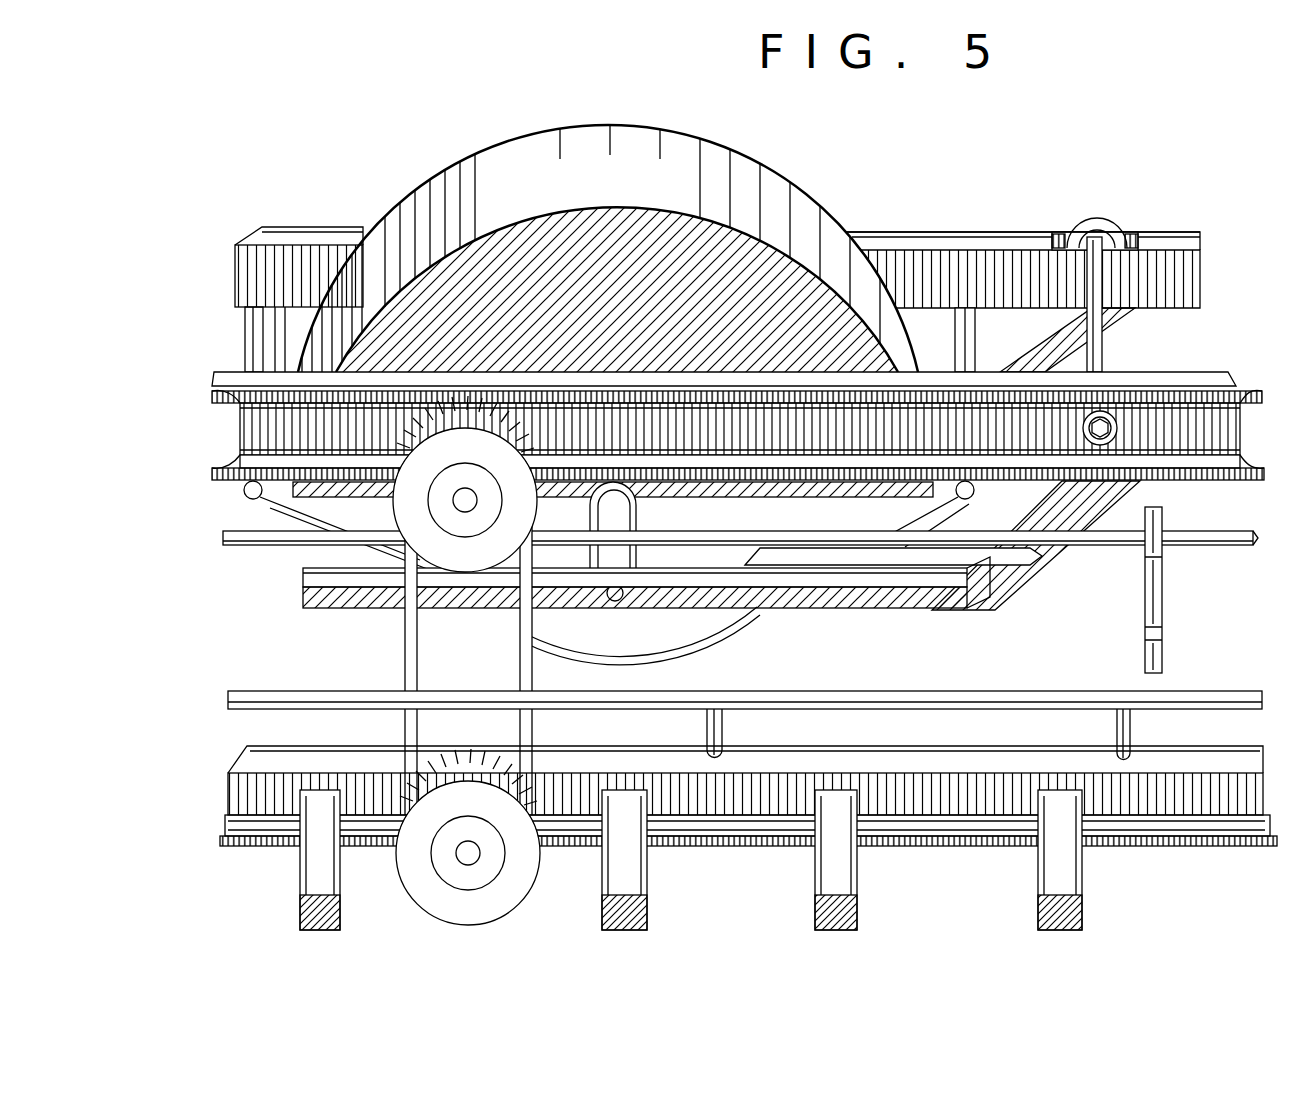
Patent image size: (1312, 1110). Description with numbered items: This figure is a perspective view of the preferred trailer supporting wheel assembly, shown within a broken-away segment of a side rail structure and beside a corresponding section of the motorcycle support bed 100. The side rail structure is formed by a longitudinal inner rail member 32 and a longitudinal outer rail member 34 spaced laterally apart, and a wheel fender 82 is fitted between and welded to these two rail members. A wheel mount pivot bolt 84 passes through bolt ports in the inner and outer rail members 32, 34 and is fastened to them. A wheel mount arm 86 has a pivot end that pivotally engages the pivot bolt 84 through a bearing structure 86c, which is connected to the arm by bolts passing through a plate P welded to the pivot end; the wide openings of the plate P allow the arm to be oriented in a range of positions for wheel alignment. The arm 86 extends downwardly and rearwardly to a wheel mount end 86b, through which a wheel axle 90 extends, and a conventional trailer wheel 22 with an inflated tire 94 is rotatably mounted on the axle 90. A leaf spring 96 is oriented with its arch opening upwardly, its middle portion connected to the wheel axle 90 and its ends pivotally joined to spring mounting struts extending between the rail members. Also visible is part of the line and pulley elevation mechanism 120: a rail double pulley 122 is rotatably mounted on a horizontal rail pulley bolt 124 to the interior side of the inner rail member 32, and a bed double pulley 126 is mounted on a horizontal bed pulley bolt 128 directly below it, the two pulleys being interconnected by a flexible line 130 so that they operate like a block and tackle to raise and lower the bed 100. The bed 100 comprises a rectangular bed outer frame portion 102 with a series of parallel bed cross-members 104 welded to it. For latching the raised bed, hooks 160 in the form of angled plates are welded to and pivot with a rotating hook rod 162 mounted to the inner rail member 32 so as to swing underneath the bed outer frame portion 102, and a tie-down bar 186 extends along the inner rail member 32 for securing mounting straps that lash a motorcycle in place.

The line and pulley elevation mechanism 120 is at (416, 172).
The rail double pulley 122 is at (470, 435).
The outer rail member 34 is at (343, 472).
The leaf spring 96 is at (282, 304).
The wheel fender 82 is at (753, 270).
The bearing structure 86c is at (1072, 225).
The plate P is at (1183, 249).
The inner rail member 32 is at (253, 436).
The wheel mount pivot bolt 84 is at (1105, 426).
The rail pulley bolt 124 is at (320, 538).
The wheel mount end 86b is at (312, 602).
The wheel axle 90 is at (432, 622).
The inflated tire 94 is at (437, 656).
The tie-down bar 186 is at (250, 700).
The flexible line 130 is at (405, 738).
The bed cross-member 104 is at (310, 864).
The bed double pulley 126 is at (427, 875).
The bed pulley bolt 128 is at (473, 855).
The bed outer frame portion 102 is at (702, 803).
The hook rod 162 is at (1203, 535).
The hook 160 is at (1163, 553).
The wheel mount arm 86 is at (960, 568).
The trailer wheel 22 is at (843, 658).
The motorcycle support bed 100 is at (1255, 773).